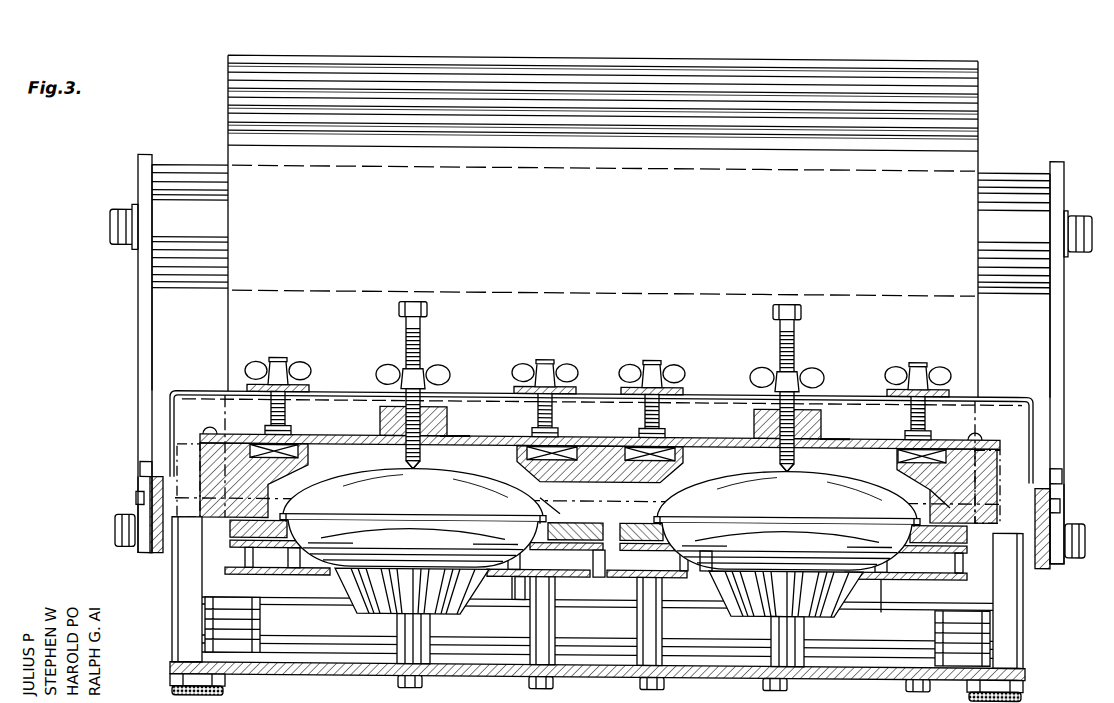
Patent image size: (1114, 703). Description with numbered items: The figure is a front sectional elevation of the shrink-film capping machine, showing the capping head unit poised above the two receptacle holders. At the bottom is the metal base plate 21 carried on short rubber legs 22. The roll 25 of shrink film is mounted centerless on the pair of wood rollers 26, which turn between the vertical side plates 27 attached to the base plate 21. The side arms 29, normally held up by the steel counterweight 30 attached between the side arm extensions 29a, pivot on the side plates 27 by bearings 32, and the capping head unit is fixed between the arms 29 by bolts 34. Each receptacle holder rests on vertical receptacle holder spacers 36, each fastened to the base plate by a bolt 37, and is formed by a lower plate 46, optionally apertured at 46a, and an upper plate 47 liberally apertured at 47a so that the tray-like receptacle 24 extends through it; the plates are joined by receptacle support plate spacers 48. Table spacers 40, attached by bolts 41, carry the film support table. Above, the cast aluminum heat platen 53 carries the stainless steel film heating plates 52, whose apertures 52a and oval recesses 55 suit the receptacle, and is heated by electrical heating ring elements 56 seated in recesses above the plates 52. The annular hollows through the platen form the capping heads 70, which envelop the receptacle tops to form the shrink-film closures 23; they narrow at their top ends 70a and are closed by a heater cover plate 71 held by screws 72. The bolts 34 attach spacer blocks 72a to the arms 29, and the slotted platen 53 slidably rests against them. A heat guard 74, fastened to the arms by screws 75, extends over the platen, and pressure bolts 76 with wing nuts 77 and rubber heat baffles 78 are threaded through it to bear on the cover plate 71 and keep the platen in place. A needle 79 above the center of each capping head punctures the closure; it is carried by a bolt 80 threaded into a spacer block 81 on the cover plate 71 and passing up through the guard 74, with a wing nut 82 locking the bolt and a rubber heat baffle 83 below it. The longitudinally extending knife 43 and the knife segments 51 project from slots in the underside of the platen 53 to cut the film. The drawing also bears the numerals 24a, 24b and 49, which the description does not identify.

The base plate 21 is at (310, 677).
The rubber legs 22 is at (170, 683).
The shrink-film closures 23 is at (528, 490).
The tray-like receptacles 24 is at (360, 612).
The die rim plate 24a is at (385, 470).
The die holder base 24b is at (290, 572).
The roll of shrink-film material 25 is at (552, 58).
The wood rollers 26 is at (597, 627).
The vertical side plates 27 is at (250, 690).
The side arms 29 is at (148, 557).
The side arm extensions 29a is at (140, 369).
The counterweight 30 is at (1005, 170).
The bearings 32 is at (125, 551).
The bolts 34 is at (136, 500).
The receptacle holder spacers 36 is at (648, 665).
The bolt 37 is at (530, 686).
The table spacers 40 is at (397, 655).
The bolts 41 is at (418, 688).
The longitudinally extending knife 43 is at (604, 577).
The lower plate 46 is at (178, 580).
The aperture 46a is at (346, 576).
The upper plate 47 is at (245, 552).
The aperture 47a is at (520, 600).
The receptacle support plate spacers 48 is at (255, 577).
The plate 49 is at (232, 548).
The knife segments 51 is at (512, 572).
The film heating plates 52 is at (230, 532).
The apertures 52a is at (562, 512).
The heat platen 53 is at (998, 462).
The upward recess 55 is at (538, 514).
The electrical heating ring elements 56 is at (600, 447).
The capping heads 70 is at (272, 484).
The narrowed top ends 70a is at (318, 437).
The heater cover plate 71 is at (835, 437).
The screws 72 is at (210, 432).
The spacer blocks 72a is at (150, 490).
The heat guard 74 is at (838, 394).
The screws 75 is at (138, 470).
The pressure bolts 76 is at (271, 417).
The wing nuts 77 is at (266, 362).
The rubber heat baffles 78 is at (258, 387).
The needle 79 is at (455, 437).
The bolts 80 is at (406, 323).
The spacer blocks 81 is at (380, 417).
The wing nuts 82 is at (405, 362).
The rubber heat baffle 83 is at (392, 389).